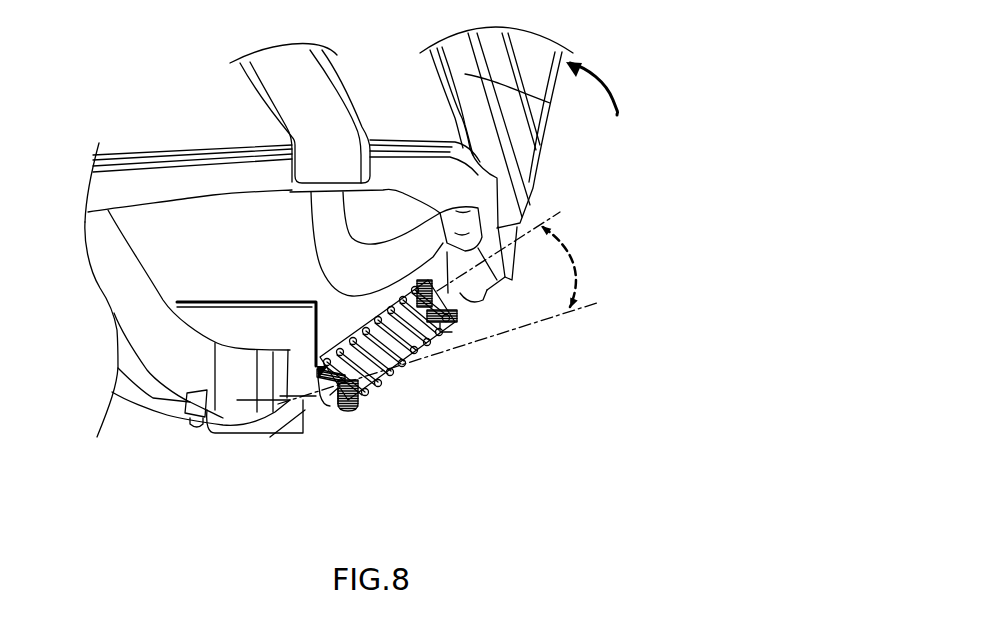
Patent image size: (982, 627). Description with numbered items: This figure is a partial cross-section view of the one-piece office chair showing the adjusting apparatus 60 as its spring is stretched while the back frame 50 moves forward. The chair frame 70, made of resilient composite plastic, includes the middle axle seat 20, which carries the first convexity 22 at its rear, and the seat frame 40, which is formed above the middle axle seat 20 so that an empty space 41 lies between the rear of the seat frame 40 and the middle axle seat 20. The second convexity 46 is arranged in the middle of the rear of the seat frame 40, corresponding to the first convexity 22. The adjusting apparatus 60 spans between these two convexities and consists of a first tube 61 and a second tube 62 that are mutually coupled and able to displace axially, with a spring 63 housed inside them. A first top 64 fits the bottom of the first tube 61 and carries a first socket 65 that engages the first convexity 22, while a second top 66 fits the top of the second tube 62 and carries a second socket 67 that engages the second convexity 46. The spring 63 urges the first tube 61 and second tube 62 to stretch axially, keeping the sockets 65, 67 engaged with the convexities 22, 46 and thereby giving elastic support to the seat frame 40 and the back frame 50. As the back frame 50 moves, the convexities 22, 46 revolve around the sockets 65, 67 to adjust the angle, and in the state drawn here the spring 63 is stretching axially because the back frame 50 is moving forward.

The chair frame 70 is at (104, 51).
The middle axle seat 20 is at (233, 322).
The first convexity 22 is at (325, 395).
The seat frame 40 is at (175, 154).
The empty space 41 is at (337, 323).
The second convexity 46 is at (483, 303).
The back frame 50 is at (550, 103).
The adjusting apparatus 60 is at (446, 400).
The first tube 61 is at (372, 392).
The second tube 62 is at (436, 362).
The spring 63 is at (400, 370).
The first top 64 is at (347, 387).
The first socket 65 is at (332, 400).
The second top 66 is at (447, 320).
The second socket 67 is at (477, 344).